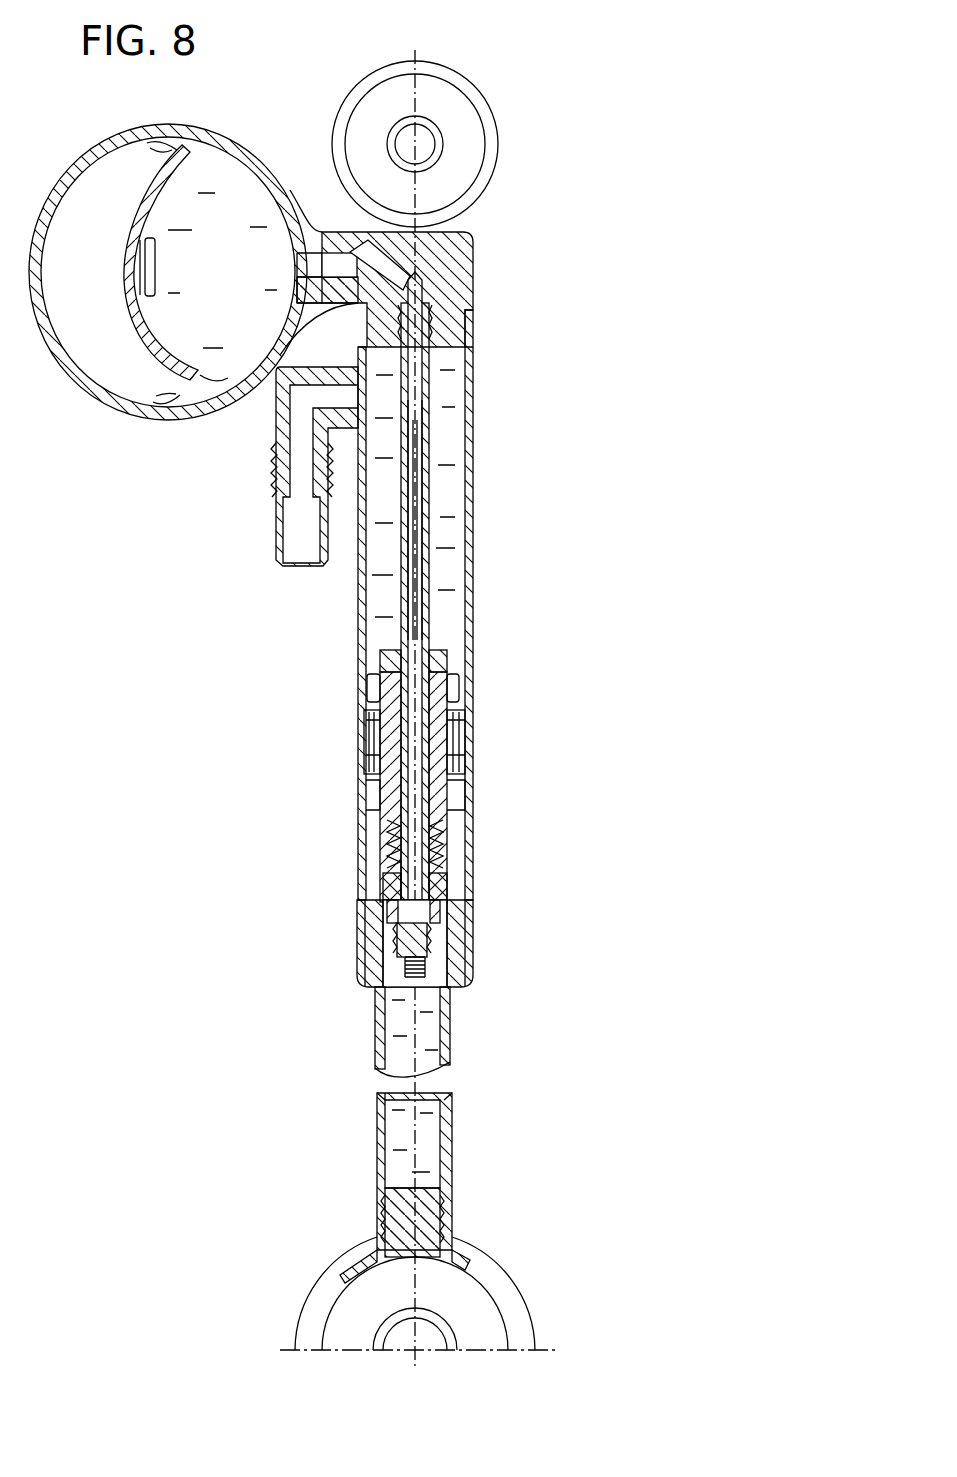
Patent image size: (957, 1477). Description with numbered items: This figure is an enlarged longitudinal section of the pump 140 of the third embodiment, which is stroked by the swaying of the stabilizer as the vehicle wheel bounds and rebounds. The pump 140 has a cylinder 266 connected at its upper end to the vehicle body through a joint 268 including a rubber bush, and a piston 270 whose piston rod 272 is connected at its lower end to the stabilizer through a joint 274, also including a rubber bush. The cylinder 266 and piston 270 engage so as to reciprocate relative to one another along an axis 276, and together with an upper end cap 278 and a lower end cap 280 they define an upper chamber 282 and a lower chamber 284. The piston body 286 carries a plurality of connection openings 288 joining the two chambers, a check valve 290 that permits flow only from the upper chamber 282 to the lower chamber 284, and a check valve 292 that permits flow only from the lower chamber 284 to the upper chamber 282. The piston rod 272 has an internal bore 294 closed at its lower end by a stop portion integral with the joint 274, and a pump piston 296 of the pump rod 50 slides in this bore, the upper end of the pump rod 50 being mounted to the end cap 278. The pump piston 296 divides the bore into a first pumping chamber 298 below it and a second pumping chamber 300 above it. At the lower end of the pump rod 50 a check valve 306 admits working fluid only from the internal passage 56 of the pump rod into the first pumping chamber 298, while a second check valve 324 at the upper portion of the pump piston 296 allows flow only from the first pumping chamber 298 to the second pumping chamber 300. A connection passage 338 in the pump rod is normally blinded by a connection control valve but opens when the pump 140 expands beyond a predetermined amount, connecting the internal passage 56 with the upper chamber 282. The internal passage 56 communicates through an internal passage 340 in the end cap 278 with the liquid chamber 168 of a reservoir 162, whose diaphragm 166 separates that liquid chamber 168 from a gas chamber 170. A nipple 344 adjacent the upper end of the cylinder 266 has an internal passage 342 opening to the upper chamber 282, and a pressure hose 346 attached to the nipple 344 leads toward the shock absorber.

The pump rod 50 is at (437, 560).
The internal passage 56 is at (423, 494).
The pump 140 is at (392, 580).
The reservoir 162 is at (186, 307).
The diaphragm 166 is at (167, 337).
The liquid chamber 168 is at (224, 368).
The gas chamber 170 is at (83, 325).
The cylinder 266 is at (452, 532).
The joint 268 is at (477, 146).
The piston 270 is at (409, 1036).
The piston rod 272 is at (419, 1175).
The joint 274 is at (465, 1305).
The axis 276 is at (420, 1150).
The end cap 278 is at (418, 233).
The end cap 280 is at (419, 959).
The upper chamber 282 is at (452, 450).
The lower chamber 284 is at (456, 850).
The piston body 286 is at (470, 732).
The connection openings 288 is at (365, 738).
The check valve 290 is at (457, 772).
The check valve 292 is at (362, 700).
The internal bore 294 is at (392, 1115).
The pump piston 296 is at (443, 888).
The first pumping chamber 298 is at (430, 1047).
The second pumping chamber 300 is at (385, 855).
The check valve 306 is at (430, 992).
The second check valve 324 is at (455, 825).
The connection passage 338 is at (402, 680).
The internal passage 340 is at (398, 268).
The internal passage 342 is at (278, 373).
The nipple 344 is at (425, 378).
The pressure hose 346 is at (278, 547).